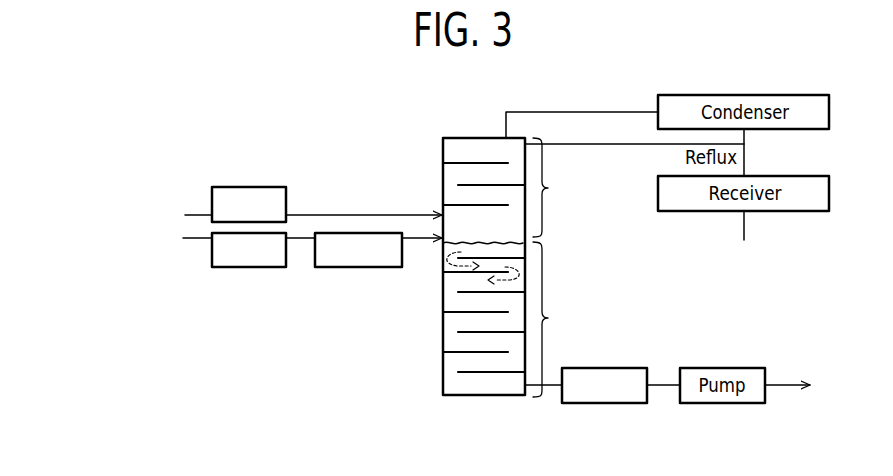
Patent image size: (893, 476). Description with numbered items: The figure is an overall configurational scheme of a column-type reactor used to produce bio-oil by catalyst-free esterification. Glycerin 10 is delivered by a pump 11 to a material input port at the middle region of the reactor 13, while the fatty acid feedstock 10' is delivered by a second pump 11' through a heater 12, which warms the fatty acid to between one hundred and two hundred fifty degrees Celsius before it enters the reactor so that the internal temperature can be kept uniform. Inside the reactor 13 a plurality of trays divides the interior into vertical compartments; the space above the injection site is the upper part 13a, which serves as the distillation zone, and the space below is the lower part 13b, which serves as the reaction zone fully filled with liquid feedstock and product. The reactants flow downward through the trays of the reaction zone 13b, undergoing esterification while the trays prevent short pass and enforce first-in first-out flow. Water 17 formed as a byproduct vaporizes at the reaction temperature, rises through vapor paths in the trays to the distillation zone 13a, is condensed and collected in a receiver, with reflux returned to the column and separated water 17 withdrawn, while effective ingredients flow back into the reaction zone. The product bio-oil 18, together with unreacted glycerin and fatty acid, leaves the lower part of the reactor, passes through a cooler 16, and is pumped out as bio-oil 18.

The glycerin 10 is at (162, 185).
The fatty acid feedstock 10' is at (135, 266).
The glycerin pump 11 is at (249, 179).
The fatty acid feed pump 11' is at (249, 277).
The heater 12 is at (357, 268).
The reactive distillation column 13 is at (460, 137).
The upper part 13a is at (548, 208).
The lower part 13b is at (548, 293).
The cooler 16 is at (603, 405).
The water 17 is at (773, 253).
The bio-oil 18 is at (838, 398).